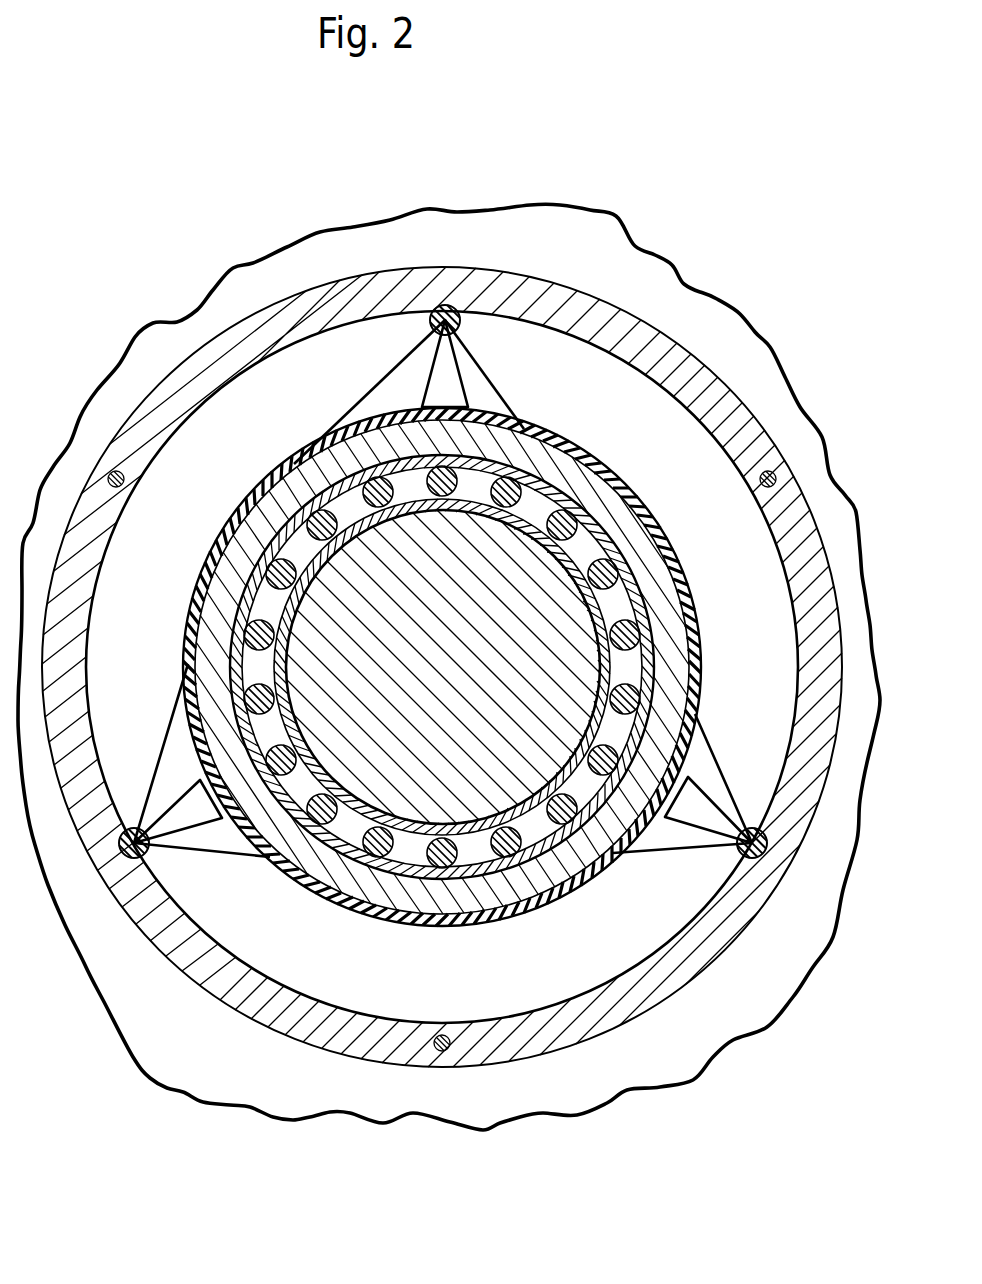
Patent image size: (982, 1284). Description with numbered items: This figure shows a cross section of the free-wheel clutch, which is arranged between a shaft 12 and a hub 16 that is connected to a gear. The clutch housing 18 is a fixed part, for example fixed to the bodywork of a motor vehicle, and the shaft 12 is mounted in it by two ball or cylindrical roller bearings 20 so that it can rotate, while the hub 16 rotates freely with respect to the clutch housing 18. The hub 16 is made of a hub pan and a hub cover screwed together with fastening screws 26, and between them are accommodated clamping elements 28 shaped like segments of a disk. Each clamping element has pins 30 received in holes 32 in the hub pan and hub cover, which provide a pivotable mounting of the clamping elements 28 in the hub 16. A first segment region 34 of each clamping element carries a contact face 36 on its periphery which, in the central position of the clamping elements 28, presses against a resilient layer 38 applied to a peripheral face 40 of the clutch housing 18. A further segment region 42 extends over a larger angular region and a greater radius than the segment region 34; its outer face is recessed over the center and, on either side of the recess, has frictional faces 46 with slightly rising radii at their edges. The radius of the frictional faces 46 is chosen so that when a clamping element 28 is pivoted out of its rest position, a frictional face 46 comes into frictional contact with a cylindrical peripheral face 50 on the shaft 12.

The shaft 12 is at (544, 594).
The hub 16 is at (788, 850).
The clutch housing 18 is at (503, 918).
The ball or cylindrical roller bearings 20 is at (633, 610).
The fastening screws 26 is at (775, 476).
The clamping elements 28 is at (400, 376).
The pins 30 is at (463, 307).
The holes 32 is at (457, 305).
The first segment region 34 is at (443, 372).
The contact face 36 is at (370, 436).
The resilient layer 38 is at (397, 924).
The peripheral face 40 is at (580, 888).
The segment region 42 is at (488, 402).
The frictional faces 46 is at (524, 461).
The cylindrical peripheral face 50 is at (301, 882).